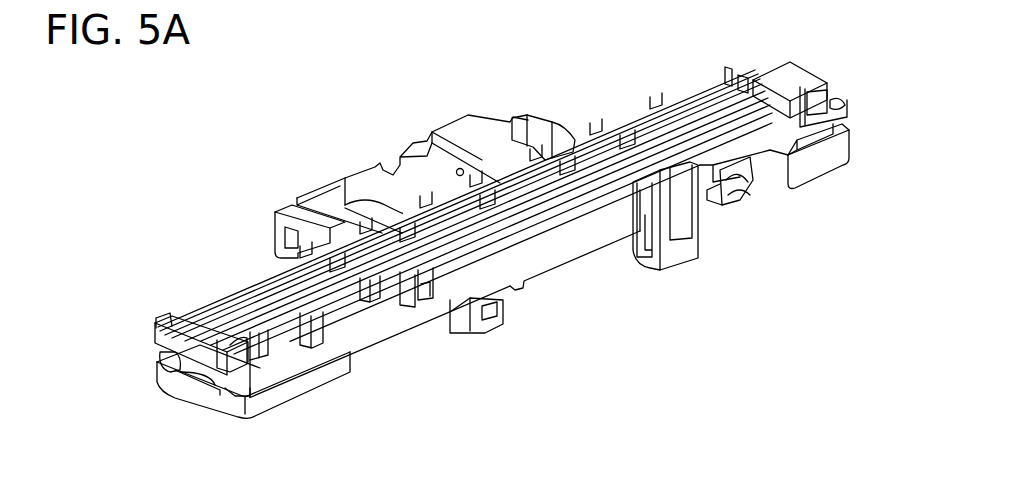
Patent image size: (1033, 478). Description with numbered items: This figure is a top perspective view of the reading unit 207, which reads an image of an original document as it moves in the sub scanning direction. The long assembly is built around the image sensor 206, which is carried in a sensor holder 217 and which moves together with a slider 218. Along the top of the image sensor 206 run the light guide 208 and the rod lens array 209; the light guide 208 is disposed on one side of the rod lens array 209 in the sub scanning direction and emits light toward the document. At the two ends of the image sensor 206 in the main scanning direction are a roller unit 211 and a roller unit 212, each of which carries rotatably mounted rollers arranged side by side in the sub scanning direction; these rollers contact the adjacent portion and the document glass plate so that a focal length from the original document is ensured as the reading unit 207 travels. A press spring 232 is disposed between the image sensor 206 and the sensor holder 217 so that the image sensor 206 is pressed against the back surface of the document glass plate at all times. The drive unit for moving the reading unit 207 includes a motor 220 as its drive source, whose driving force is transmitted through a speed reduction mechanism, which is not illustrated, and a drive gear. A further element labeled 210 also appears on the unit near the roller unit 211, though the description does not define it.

The reading unit 207 is at (345, 152).
The image sensor 206 is at (497, 196).
The light guide 208 is at (673, 112).
The rod lens array 209 is at (672, 104).
The motor 220 is at (538, 128).
The roller unit 211 is at (787, 75).
The hook portion 210 is at (722, 144).
The sensor holder 217 is at (578, 238).
The slider 218 is at (466, 319).
The roller unit 212 is at (182, 313).
The press spring 232 is at (205, 375).